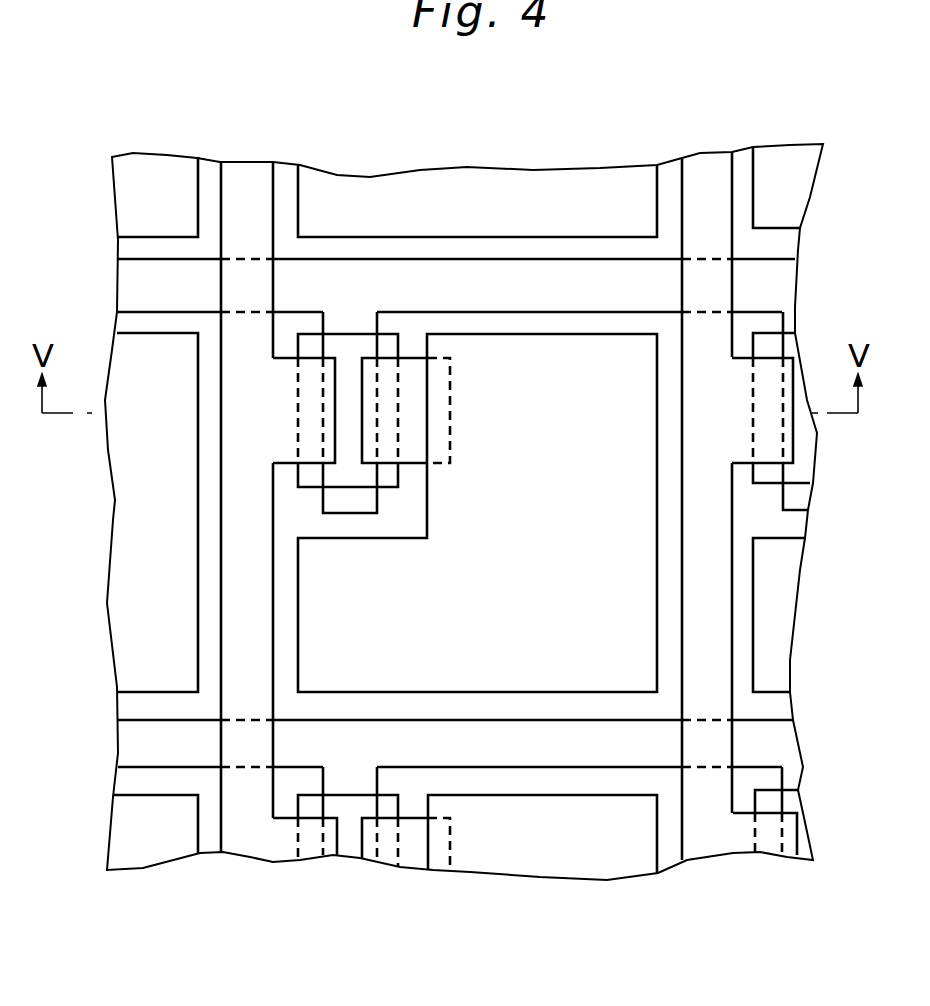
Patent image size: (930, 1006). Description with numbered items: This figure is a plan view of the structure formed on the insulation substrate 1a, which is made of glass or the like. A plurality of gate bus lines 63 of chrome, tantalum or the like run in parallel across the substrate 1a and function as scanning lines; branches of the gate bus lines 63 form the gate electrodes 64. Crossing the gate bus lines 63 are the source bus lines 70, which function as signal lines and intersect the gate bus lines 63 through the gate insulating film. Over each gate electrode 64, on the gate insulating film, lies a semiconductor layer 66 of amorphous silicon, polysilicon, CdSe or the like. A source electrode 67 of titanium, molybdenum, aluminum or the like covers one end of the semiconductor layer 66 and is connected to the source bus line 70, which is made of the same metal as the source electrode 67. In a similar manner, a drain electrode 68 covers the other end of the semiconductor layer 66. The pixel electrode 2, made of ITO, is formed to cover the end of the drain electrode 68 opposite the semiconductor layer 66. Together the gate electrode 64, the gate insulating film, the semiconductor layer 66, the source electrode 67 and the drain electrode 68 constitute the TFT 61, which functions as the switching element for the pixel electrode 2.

The substrate 1a is at (423, 170).
The pixel electrode 2 is at (505, 348).
The TFT 61 is at (241, 412).
The gate bus line 63 is at (128, 277).
The gate electrode 64 is at (333, 502).
The semiconductor layer 66 is at (335, 350).
The source electrode 67 is at (280, 428).
The drain electrode 68 is at (412, 395).
The source bus line 70 is at (248, 175).